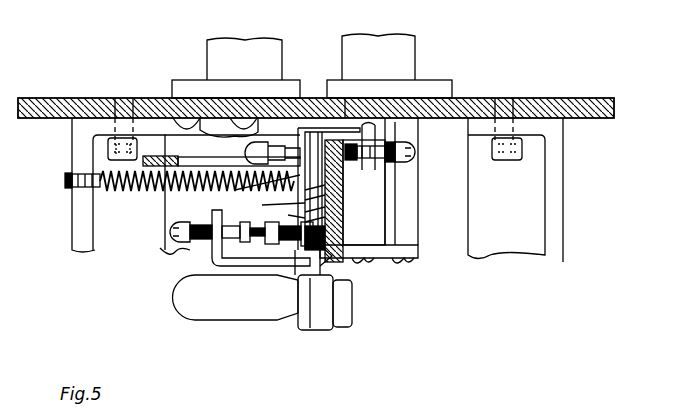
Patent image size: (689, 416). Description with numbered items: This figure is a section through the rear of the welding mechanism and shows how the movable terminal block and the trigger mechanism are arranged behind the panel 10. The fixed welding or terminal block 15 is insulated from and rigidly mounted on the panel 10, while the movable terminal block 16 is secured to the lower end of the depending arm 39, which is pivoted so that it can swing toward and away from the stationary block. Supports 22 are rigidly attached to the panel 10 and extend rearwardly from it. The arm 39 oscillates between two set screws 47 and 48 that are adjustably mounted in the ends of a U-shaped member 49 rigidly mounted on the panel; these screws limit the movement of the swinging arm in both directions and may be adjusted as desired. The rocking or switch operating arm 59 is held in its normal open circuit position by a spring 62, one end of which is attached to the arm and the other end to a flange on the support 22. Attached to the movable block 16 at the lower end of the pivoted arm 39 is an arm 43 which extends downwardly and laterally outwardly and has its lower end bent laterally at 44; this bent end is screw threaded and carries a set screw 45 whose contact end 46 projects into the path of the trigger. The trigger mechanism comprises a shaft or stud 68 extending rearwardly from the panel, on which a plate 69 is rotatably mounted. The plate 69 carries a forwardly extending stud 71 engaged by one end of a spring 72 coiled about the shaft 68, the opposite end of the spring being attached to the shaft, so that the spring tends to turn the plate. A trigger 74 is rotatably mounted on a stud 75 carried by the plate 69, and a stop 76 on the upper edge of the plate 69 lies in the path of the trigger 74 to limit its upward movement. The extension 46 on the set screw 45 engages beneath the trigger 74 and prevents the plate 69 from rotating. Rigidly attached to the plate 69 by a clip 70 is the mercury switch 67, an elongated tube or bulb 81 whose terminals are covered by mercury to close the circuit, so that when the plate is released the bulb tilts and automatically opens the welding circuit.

The panel 10 is at (590, 98).
The fixed welding terminal block 15 is at (215, 56).
The movable terminal block 16 is at (400, 58).
The supports 22 is at (72, 228).
The depending arm 39 is at (343, 200).
The arm 43 is at (252, 244).
The laterally bent end 44 is at (208, 258).
The set screw 45 is at (160, 256).
The contact end 46 is at (200, 300).
The set screw 47 is at (312, 128).
The set screw 48 is at (360, 140).
The U-shaped member 49 is at (322, 128).
The rocking or switch operating arm 59 is at (205, 160).
The spring 62 is at (142, 196).
The mercury switch 67 is at (290, 332).
The shaft or stud 68 is at (338, 260).
The plate 69 is at (290, 270).
The clip 70 is at (340, 330).
The forwardly extending stud 71 is at (288, 215).
The spring 72 is at (343, 212).
The trigger 74 is at (235, 190).
The stud 75 is at (262, 205).
The stop 76 is at (216, 268).
The tube or bulb 81 is at (258, 248).